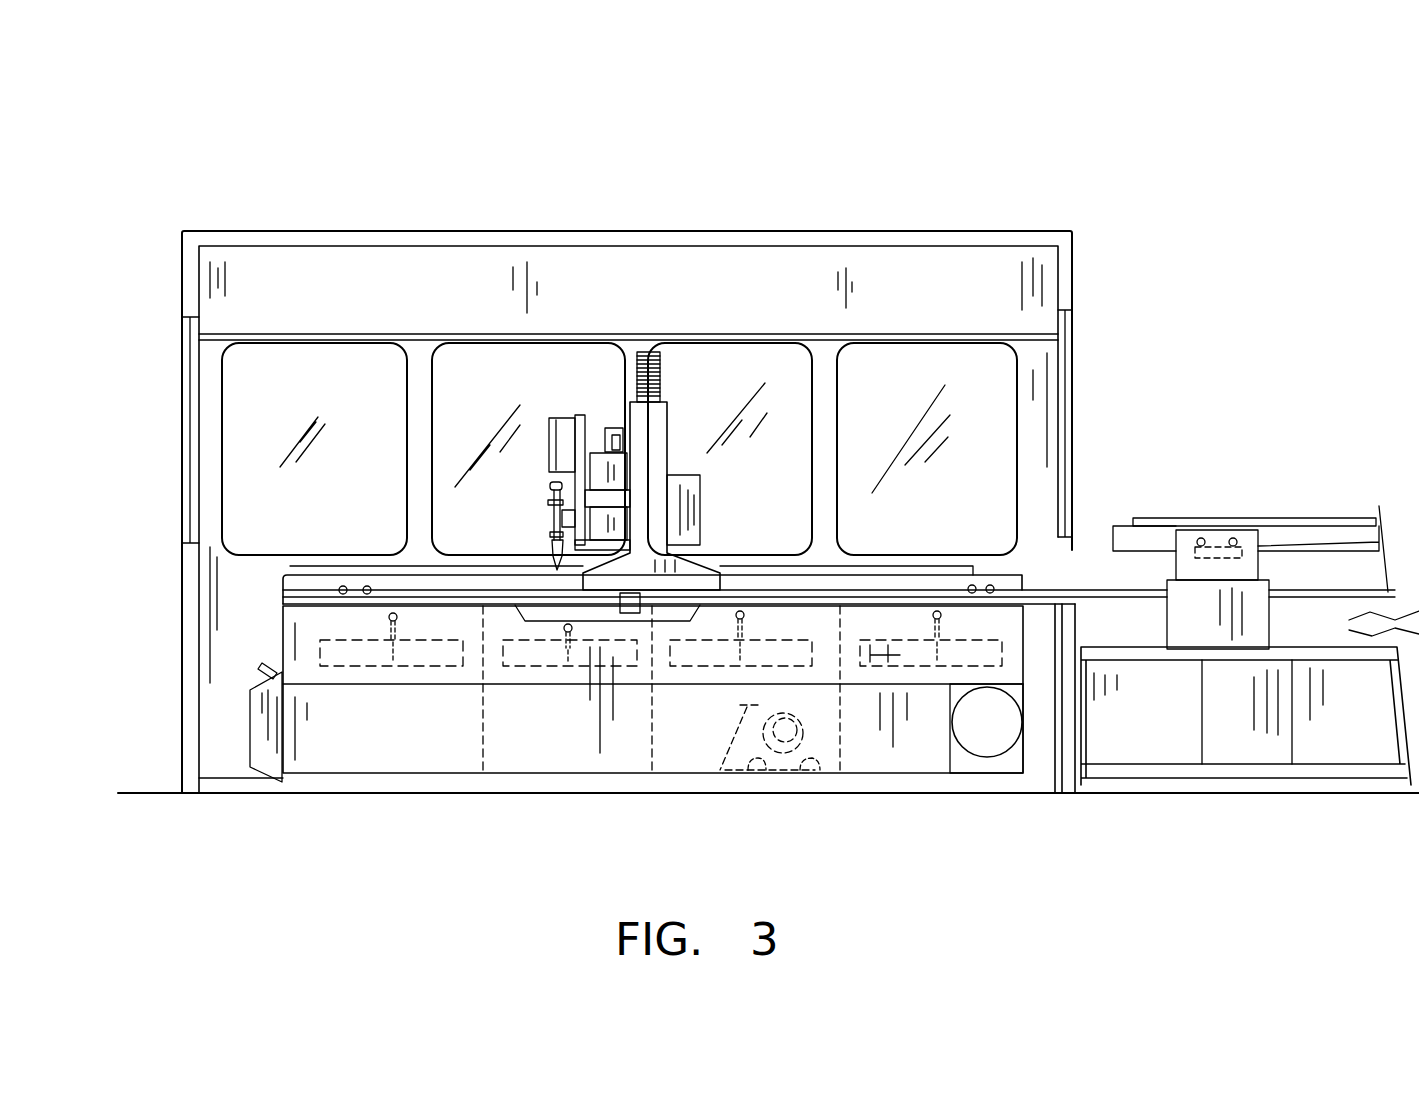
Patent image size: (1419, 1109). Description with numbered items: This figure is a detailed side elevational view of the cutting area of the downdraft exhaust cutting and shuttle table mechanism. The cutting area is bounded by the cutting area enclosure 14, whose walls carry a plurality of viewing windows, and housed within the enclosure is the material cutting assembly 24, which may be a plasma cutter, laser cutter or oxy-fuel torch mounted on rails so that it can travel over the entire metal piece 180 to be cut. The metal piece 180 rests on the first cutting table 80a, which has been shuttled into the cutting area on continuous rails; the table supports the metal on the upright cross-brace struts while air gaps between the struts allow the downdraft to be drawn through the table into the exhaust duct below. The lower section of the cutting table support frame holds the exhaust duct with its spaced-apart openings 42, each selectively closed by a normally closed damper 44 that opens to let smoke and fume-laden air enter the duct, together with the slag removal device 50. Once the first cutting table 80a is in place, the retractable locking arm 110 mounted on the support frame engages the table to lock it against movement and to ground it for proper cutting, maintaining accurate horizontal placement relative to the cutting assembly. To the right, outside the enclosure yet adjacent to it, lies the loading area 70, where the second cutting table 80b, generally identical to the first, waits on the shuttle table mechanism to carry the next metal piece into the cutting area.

The cutting area enclosure 14 is at (1065, 280).
The material cutting assembly 24 is at (650, 428).
The metal piece 180 is at (340, 566).
The first cutting table 80a is at (817, 583).
The spaced-apart openings 42 is at (437, 667).
The normally closed damper 44 is at (368, 660).
The slag removal device 50 is at (755, 777).
The retractable locking arm 110 is at (1027, 590).
The loading area 70 is at (1261, 517).
The second cutting table 80b is at (1311, 535).